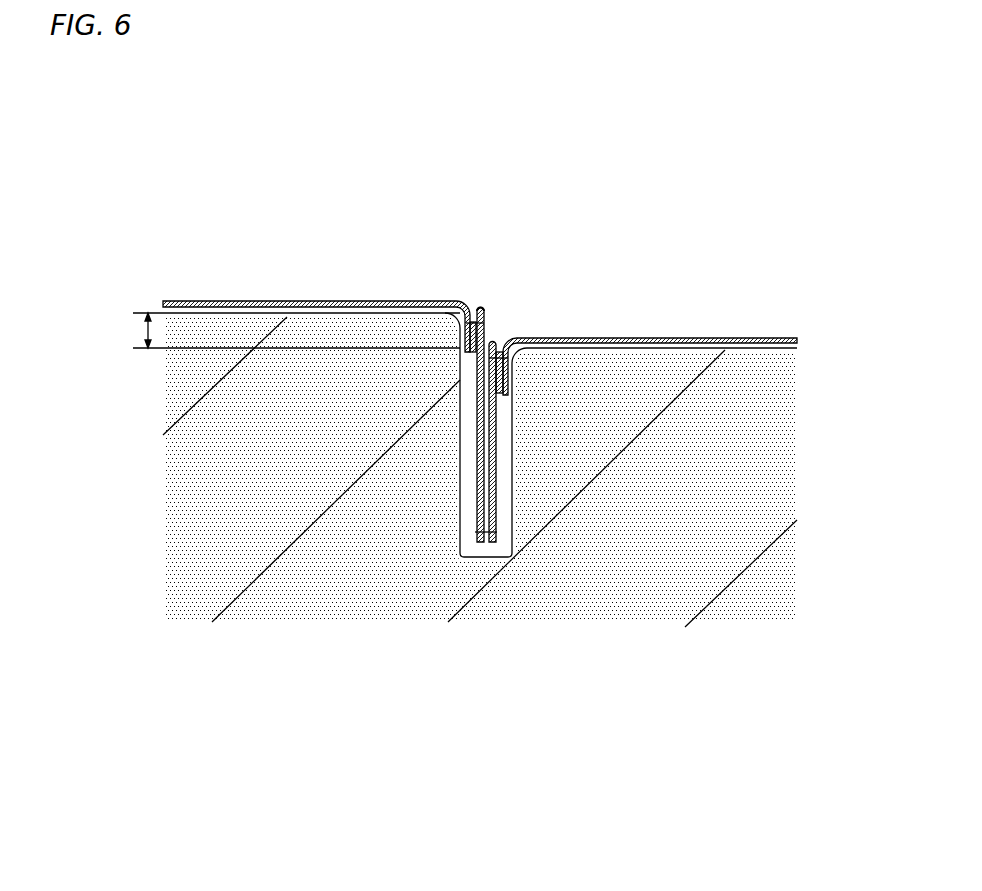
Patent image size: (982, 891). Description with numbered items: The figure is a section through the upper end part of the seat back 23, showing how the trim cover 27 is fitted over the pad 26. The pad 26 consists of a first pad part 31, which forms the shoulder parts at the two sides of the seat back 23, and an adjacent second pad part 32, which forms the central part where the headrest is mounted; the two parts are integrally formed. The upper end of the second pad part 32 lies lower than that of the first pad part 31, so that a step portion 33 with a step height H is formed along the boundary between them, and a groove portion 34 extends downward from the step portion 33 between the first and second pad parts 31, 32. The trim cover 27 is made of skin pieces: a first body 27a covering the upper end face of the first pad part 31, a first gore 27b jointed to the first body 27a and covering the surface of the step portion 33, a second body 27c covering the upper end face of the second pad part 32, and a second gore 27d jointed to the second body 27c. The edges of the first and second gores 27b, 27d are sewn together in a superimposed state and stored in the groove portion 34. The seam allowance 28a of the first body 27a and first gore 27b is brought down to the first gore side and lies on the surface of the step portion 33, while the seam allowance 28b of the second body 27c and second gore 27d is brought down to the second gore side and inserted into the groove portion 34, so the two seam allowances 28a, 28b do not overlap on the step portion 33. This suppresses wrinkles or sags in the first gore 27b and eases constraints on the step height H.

The seat back 23 is at (192, 174).
The pad 26 is at (533, 732).
The trim cover 27 is at (638, 212).
The first body 27a is at (468, 326).
The first gore 27b is at (475, 310).
The second body 27c is at (506, 360).
The second gore 27d is at (496, 353).
The seam allowance 28a is at (463, 345).
The seam allowance 28b is at (508, 382).
The first pad part 31 is at (413, 610).
The second pad part 32 is at (545, 610).
The step portion 33 is at (490, 312).
The groove portion 34 is at (461, 535).
The step height H is at (293, 330).